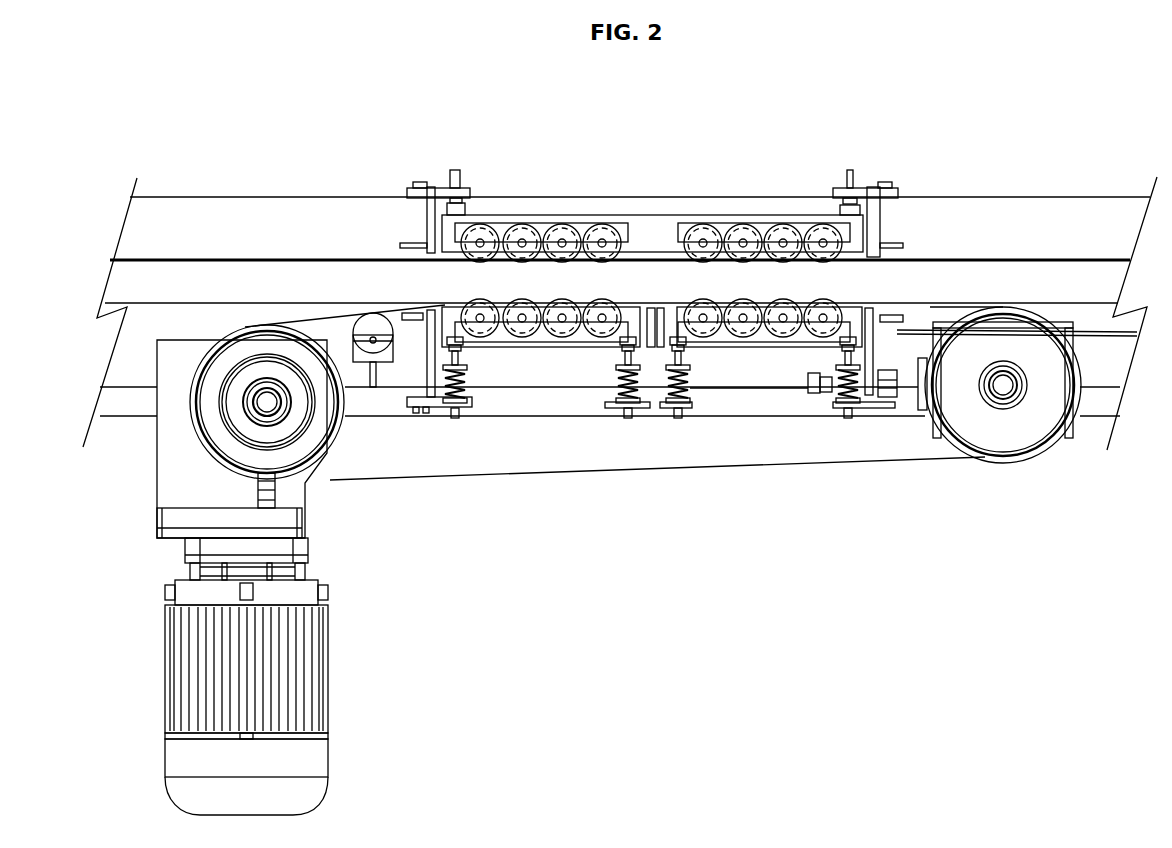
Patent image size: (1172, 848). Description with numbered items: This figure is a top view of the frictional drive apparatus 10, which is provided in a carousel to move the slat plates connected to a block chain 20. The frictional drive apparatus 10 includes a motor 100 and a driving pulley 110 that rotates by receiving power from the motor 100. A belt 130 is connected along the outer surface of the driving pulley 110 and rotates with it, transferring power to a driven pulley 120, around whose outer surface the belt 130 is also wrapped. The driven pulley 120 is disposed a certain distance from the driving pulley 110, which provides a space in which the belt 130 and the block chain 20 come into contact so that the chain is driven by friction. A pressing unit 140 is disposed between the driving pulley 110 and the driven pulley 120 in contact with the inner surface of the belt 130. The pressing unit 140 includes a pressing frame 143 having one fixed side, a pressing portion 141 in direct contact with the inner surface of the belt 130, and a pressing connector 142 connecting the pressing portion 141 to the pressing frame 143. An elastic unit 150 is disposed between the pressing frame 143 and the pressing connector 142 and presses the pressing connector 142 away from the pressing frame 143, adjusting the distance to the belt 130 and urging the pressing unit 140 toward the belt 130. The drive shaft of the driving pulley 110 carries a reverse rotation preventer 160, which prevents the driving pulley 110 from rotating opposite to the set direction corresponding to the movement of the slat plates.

The frictional drive apparatus 10 is at (626, 103).
The block chain 20 is at (537, 277).
The motor 100 is at (170, 672).
The driving pulley 110 is at (218, 434).
The driven pulley 120 is at (1015, 440).
The belt 130 is at (790, 477).
The pressing unit 140 is at (625, 518).
The pressing portion 141 is at (600, 337).
The pressing connector 142 is at (545, 340).
The pressing frame 143 is at (443, 410).
The elastic unit 150 is at (630, 405).
The reverse rotation preventer 160 is at (265, 398).